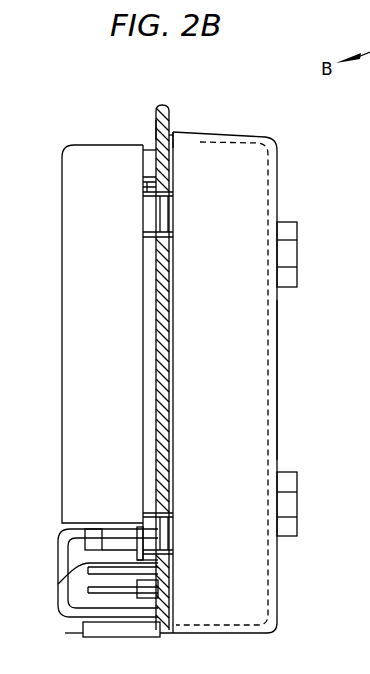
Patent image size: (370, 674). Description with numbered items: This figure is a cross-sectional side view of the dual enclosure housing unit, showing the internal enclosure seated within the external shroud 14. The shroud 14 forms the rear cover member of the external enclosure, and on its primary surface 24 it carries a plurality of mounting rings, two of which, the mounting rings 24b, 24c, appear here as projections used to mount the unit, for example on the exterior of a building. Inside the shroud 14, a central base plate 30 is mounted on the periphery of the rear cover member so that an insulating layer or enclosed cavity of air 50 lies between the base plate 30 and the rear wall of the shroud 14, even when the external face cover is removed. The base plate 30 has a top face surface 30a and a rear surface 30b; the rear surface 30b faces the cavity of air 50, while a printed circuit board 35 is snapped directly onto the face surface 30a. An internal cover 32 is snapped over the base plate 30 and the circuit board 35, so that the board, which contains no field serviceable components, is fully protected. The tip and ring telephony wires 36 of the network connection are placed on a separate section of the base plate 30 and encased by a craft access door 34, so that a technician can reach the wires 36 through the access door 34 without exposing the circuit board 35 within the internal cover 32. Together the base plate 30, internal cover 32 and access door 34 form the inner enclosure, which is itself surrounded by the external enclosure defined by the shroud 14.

The shroud 14 is at (263, 137).
The primary surface 24 is at (283, 378).
The mounting ring 24b is at (297, 232).
The mounting ring 24c is at (290, 483).
The base plate 30 is at (167, 108).
The top face surface 30a is at (150, 128).
The rear surface 30b is at (186, 143).
The internal cover 32 is at (104, 160).
The craft access door 34 is at (52, 552).
The printed circuit board 35 is at (140, 326).
The tip and ring telephony wires 36 is at (86, 567).
The enclosed cavity of air 50 is at (228, 372).